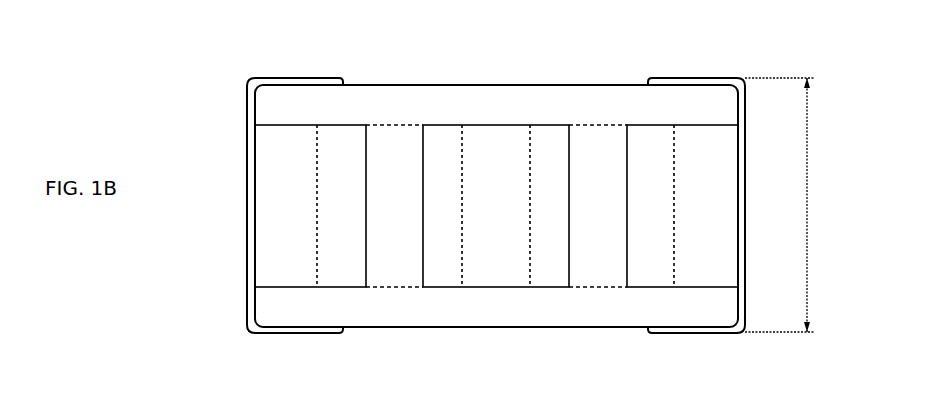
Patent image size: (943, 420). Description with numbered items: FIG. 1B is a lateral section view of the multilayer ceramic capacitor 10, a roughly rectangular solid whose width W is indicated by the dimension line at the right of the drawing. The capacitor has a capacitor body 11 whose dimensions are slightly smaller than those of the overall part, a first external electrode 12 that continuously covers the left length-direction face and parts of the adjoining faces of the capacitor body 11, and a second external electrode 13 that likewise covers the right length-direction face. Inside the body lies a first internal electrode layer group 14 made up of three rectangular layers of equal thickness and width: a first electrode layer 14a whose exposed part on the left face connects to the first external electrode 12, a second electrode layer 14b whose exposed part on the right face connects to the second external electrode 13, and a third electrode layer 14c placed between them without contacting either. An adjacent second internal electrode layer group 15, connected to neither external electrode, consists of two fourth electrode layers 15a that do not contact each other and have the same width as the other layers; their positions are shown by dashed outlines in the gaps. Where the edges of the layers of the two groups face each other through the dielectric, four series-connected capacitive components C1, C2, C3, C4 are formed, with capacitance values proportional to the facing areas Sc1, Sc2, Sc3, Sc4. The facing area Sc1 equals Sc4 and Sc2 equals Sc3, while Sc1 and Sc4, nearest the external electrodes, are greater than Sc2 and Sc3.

The multilayer ceramic capacitor 10 is at (268, 78).
The capacitor body 11 is at (452, 86).
The first external electrode 12 is at (284, 78).
The second external electrode 13 is at (705, 78).
The first internal electrode layer group 14 is at (733, 183).
The first electrode layer 14a is at (303, 152).
The second electrode layer 14b is at (684, 152).
The third electrode layer 14c is at (492, 152).
The second internal electrode layer group 15 is at (657, 240).
The fourth electrode layer 15a is at (395, 152).
The capacitive component C1 is at (352, 215).
The capacitive component C2 is at (453, 215).
The capacitive component C3 is at (557, 215).
The capacitive component C4 is at (657, 215).
The facing area Sc1 is at (340, 272).
The facing area Sc2 is at (443, 272).
The facing area Sc3 is at (548, 272).
The facing area Sc4 is at (652, 272).
The width W is at (785, 205).